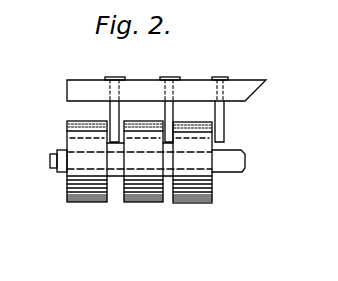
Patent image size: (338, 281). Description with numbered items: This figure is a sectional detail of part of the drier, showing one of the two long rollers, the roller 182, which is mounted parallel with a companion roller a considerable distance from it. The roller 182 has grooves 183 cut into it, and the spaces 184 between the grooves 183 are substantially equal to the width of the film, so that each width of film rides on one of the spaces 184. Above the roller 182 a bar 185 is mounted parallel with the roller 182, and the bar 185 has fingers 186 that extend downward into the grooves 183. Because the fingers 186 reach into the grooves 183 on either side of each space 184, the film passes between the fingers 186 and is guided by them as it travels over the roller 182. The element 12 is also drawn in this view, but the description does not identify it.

The roller 182 is at (67, 127).
The grooves 183 is at (112, 195).
The spaces 184 is at (137, 204).
The roller 12 is at (190, 205).
The bar 185 is at (249, 93).
The fingers 186 is at (224, 115).